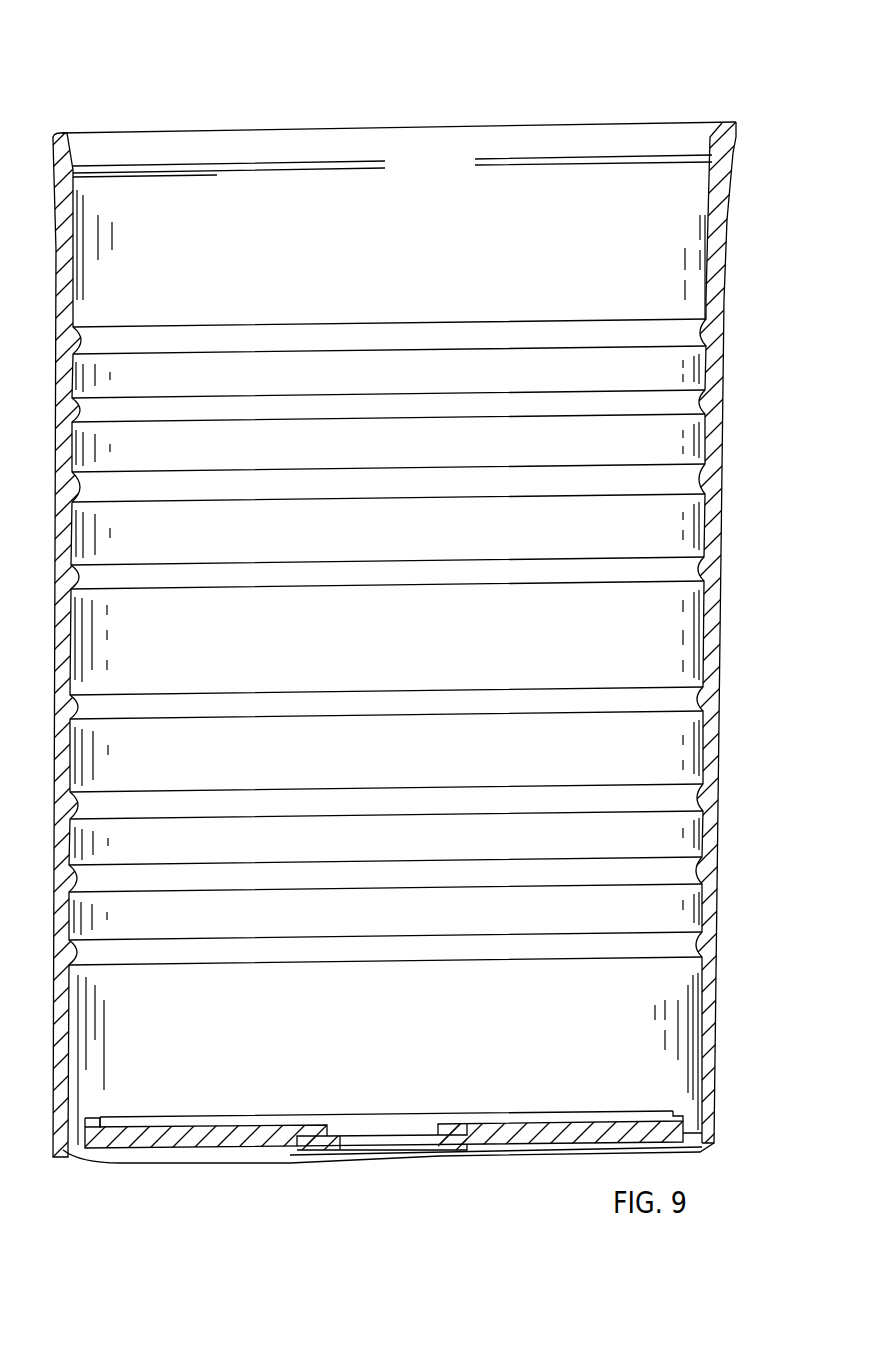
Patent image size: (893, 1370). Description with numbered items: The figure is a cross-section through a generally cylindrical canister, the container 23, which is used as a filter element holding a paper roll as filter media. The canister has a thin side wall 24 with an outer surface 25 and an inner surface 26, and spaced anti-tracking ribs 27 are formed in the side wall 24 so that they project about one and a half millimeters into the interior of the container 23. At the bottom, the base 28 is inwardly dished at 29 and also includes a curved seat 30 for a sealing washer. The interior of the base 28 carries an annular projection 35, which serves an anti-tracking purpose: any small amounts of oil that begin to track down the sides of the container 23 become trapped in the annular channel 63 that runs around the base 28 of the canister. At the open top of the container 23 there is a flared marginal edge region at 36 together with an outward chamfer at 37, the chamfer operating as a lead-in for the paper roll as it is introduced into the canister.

The container 23 is at (399, 594).
The side wall 24 is at (712, 500).
The outer surface 25 is at (718, 652).
The inner surface 26 is at (706, 215).
The anti-tracking ribs 27 is at (709, 331).
The base 28 is at (592, 1161).
The inwardly dished portion 29 is at (437, 1167).
The curved seat 30 is at (383, 1147).
The annular projection 35 is at (97, 1117).
The flared marginal edge region 36 is at (52, 161).
The outward chamfer 37 is at (72, 152).
The annular channel 63 is at (80, 1133).